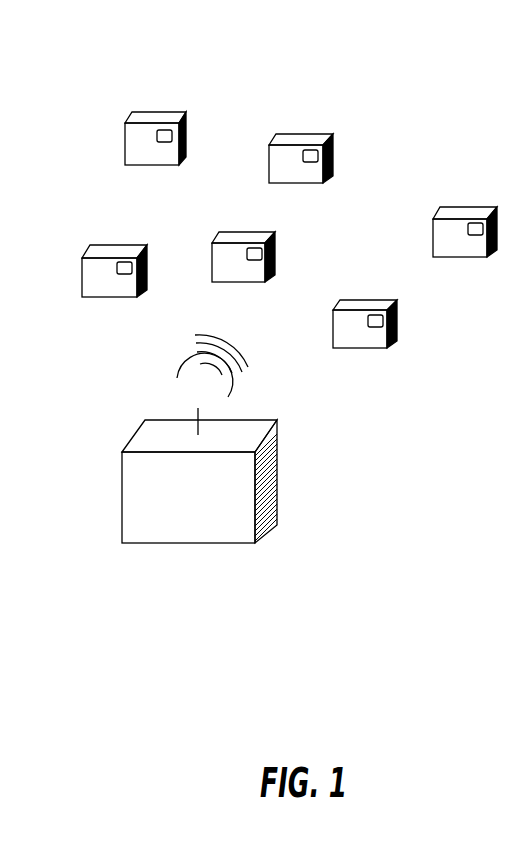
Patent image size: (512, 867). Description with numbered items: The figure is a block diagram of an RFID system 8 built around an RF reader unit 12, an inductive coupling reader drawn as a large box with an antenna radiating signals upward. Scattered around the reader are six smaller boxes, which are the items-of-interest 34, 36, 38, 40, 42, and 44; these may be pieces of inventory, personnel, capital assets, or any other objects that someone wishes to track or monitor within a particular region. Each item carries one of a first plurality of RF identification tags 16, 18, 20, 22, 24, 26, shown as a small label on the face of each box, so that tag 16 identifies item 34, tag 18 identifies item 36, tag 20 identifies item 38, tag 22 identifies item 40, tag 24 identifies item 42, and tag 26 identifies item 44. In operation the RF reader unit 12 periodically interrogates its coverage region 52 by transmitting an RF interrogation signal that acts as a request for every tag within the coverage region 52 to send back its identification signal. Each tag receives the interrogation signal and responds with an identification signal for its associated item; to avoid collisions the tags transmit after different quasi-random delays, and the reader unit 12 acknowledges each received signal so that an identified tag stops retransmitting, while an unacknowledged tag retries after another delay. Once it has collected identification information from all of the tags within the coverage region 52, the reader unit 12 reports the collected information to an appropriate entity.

The RFID system 8 is at (99, 70).
The RF reader unit 12 is at (182, 530).
The RF identification tag 16 is at (154, 125).
The RF identification tag 18 is at (292, 140).
The RF identification tag 20 is at (449, 212).
The RF identification tag 22 is at (354, 305).
The RF identification tag 24 is at (230, 254).
The RF identification tag 26 is at (104, 253).
The item-of-interest 34 is at (126, 146).
The item-of-interest 36 is at (272, 167).
The item-of-interest 38 is at (436, 239).
The item-of-interest 40 is at (336, 326).
The item-of-interest 42 is at (216, 260).
The item-of-interest 44 is at (86, 273).
The coverage region 52 is at (469, 48).